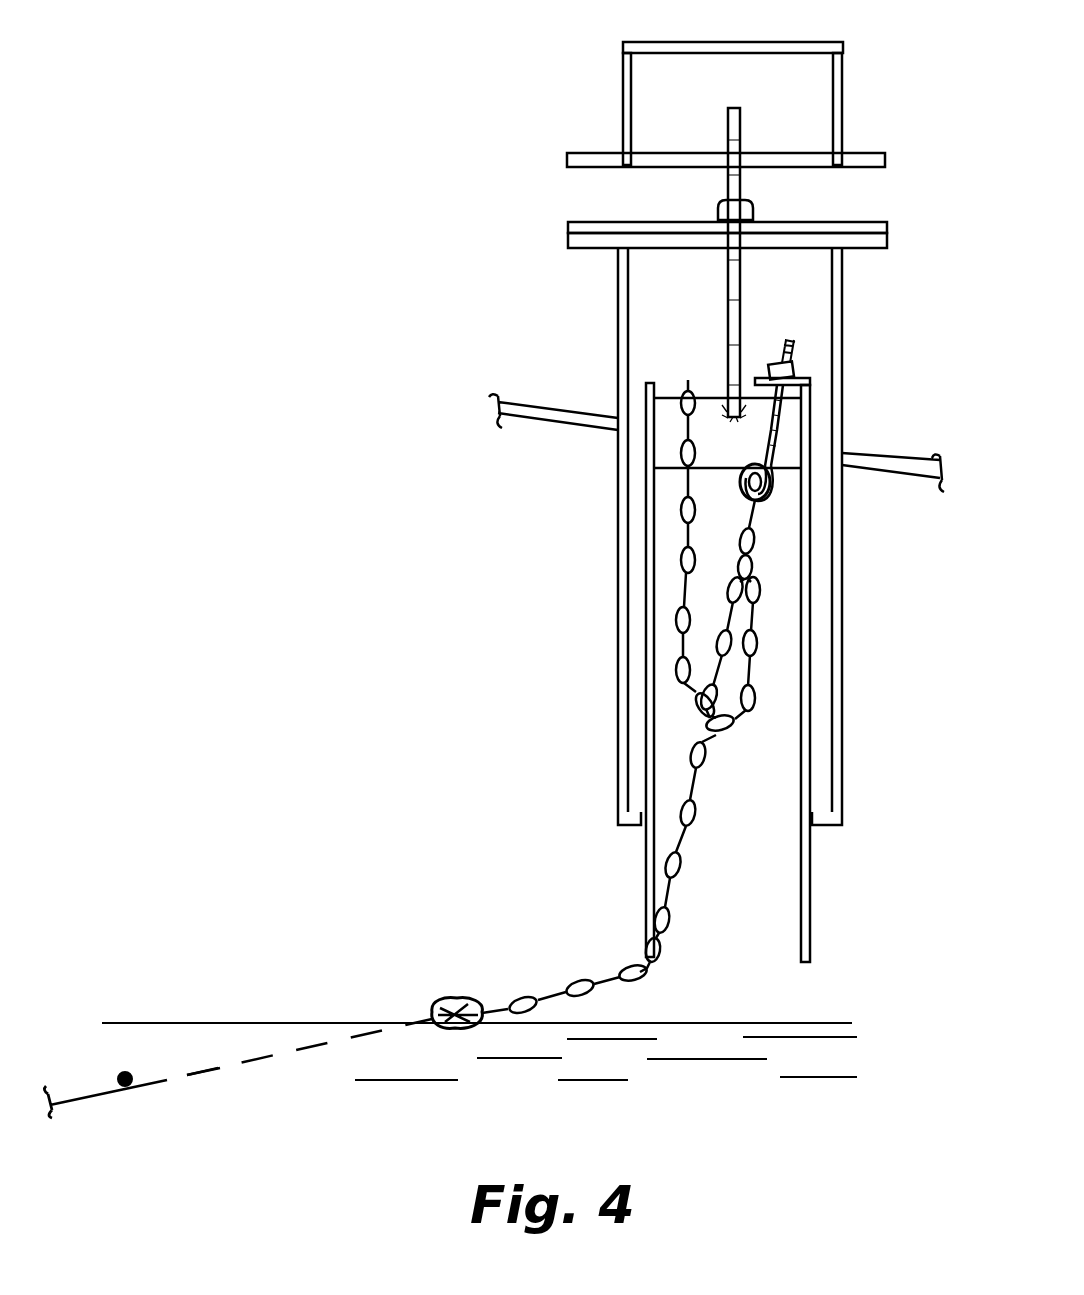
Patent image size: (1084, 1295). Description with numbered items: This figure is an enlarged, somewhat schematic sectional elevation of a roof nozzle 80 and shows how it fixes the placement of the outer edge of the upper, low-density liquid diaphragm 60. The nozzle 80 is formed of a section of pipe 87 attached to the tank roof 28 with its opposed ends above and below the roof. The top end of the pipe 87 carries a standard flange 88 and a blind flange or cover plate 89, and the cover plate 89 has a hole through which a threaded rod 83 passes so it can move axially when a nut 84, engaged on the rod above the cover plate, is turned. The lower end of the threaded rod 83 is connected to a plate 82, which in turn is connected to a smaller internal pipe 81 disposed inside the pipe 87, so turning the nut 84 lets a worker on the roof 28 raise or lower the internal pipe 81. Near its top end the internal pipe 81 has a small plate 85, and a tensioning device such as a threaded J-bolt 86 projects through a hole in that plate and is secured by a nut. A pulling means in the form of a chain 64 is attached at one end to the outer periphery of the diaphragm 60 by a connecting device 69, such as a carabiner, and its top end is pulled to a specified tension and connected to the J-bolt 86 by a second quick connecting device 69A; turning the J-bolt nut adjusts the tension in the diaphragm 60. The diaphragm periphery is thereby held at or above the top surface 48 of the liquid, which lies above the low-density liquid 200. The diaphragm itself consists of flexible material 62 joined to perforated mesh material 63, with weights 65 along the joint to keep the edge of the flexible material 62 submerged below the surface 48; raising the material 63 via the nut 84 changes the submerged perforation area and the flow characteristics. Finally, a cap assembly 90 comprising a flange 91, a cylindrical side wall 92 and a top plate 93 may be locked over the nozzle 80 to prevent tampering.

The tank roof 28 is at (528, 400).
The top surface of the liquid 48 is at (800, 1022).
The upper low-density liquid diaphragm 60 is at (187, 1078).
The flexible material 62 is at (73, 1103).
The perforated material 63 is at (268, 1058).
The chain 64 is at (543, 990).
The weights 65 is at (125, 1072).
The connecting device 69 is at (455, 998).
The second quick connecting device 69A is at (757, 507).
The roof nozzle 80 is at (840, 675).
The internal pipe 81 is at (645, 878).
The plate 82 is at (710, 396).
The threaded rod 83 is at (728, 330).
The nut 84 is at (718, 210).
The small plate 85 is at (807, 377).
The J-bolt 86 is at (777, 445).
The pipe 87 is at (612, 665).
The flange 88 is at (568, 245).
The cover plate 89 is at (568, 226).
The cap assembly 90 is at (845, 127).
The flange 91 is at (585, 153).
The cylindrical side wall 92 is at (615, 117).
The top plate 93 is at (623, 43).
The low-density liquid 200 is at (783, 1107).